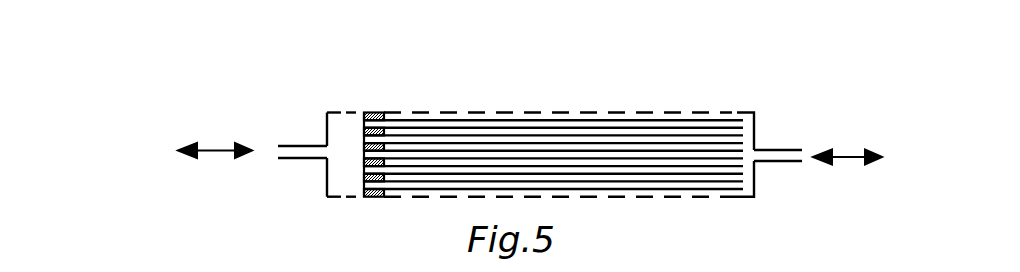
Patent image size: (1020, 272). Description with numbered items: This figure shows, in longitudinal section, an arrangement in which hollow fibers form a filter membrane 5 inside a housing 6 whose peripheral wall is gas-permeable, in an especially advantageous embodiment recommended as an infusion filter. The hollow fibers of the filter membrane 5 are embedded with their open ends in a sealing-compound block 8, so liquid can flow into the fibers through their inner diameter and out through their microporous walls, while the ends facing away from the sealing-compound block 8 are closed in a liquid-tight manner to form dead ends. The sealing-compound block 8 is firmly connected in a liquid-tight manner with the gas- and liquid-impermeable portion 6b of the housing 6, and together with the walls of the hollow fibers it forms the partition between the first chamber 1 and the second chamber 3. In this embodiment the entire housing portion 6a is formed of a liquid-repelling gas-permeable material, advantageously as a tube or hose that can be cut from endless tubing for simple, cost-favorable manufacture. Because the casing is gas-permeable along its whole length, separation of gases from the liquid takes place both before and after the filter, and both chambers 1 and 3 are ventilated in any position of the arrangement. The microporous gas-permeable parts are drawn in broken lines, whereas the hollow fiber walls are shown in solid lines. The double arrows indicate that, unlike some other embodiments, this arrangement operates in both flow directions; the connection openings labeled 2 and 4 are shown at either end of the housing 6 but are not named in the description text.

The first chamber 1 is at (335, 128).
The first optical fiber 2 is at (301, 152).
The second chamber 3 is at (746, 144).
The second optical fiber 4 is at (767, 161).
The filter membrane 5 is at (485, 142).
The housing 6 is at (592, 130).
The housing portion 6a is at (566, 113).
The housing portion 6b is at (752, 142).
The sealing-compound block 8 is at (371, 110).